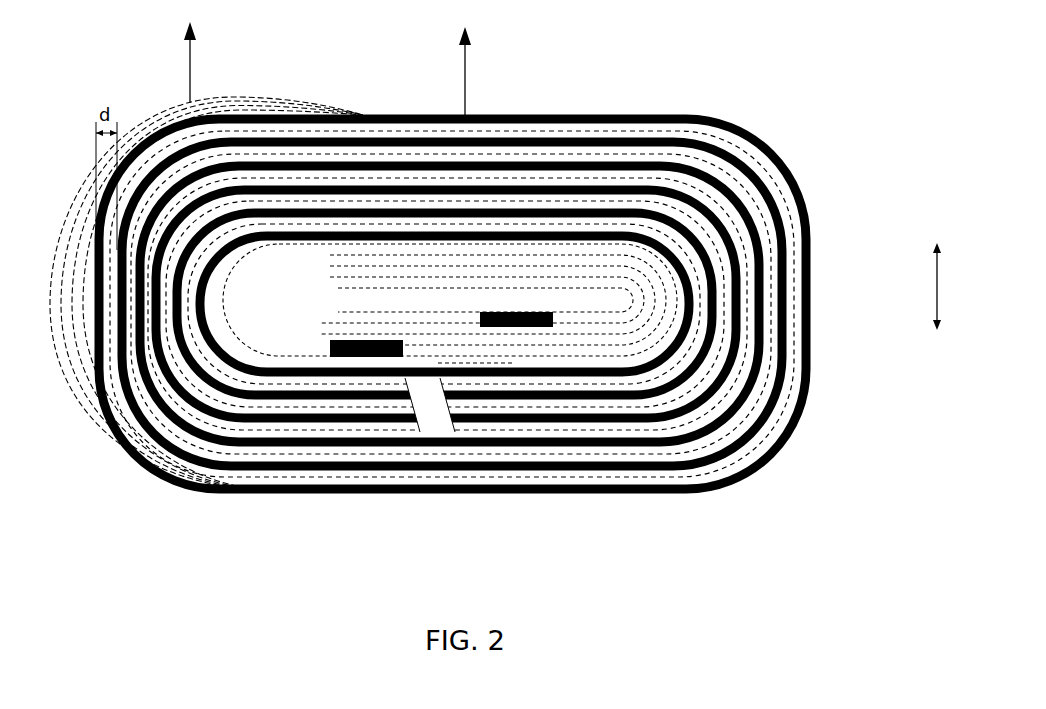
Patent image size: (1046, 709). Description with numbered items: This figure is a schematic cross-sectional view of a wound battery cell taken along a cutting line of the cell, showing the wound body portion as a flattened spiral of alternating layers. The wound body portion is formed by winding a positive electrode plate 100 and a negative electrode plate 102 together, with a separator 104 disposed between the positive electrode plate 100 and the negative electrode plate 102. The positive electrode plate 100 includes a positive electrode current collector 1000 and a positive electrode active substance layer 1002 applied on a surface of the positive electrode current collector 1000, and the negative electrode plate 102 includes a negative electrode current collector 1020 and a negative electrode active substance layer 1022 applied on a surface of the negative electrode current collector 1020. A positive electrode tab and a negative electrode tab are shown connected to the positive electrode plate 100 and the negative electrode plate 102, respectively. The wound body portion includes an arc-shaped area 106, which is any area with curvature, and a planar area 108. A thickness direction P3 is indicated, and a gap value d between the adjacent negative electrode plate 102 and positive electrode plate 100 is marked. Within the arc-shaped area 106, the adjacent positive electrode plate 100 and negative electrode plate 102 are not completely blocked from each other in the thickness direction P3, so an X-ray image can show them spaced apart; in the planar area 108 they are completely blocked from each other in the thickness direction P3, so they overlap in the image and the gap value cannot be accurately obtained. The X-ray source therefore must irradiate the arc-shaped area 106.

The positive electrode plate 100 is at (446, 381).
The positive electrode current collector 1000 is at (360, 418).
The positive electrode active substance layer 1002 is at (382, 413).
The negative electrode plate 102 is at (444, 392).
The negative electrode current collector 1020 is at (553, 393).
The negative electrode active substance layer 1022 is at (572, 393).
The separator 104 is at (130, 372).
The arc-shaped area 106 is at (187, 52).
The planar area 108 is at (468, 58).
The thickness direction P3 is at (937, 275).